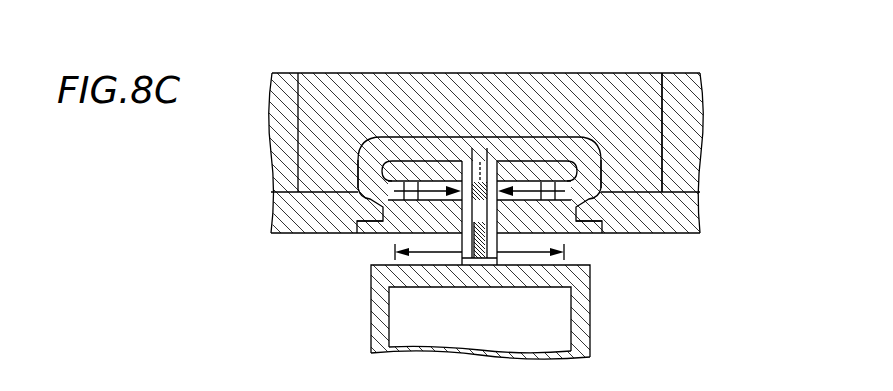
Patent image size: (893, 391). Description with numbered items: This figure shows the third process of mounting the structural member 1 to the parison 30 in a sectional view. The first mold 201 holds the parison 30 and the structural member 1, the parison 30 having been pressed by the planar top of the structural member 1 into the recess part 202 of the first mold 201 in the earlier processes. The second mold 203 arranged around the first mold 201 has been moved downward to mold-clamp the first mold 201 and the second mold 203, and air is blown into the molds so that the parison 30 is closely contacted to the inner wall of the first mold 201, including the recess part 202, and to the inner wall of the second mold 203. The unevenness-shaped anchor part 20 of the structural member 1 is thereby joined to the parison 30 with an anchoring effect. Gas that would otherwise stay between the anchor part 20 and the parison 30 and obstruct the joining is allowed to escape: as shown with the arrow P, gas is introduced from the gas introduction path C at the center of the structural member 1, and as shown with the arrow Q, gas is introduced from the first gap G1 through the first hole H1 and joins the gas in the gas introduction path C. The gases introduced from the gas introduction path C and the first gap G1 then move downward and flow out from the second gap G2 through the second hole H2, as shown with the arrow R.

The structural member 1 is at (333, 315).
The anchor part 20 is at (610, 187).
The parison 30 is at (270, 207).
The first mold 201 is at (610, 73).
The recess part 202 is at (600, 152).
The second mold 203 is at (681, 73).
The gas introduction path C is at (478, 153).
The arrow P is at (480, 162).
The arrow Q is at (479, 191).
The arrow R is at (480, 253).
The first hole H1 is at (372, 160).
The second hole H2 is at (502, 260).
The first gap G1 is at (365, 232).
The second gap G2 is at (587, 260).